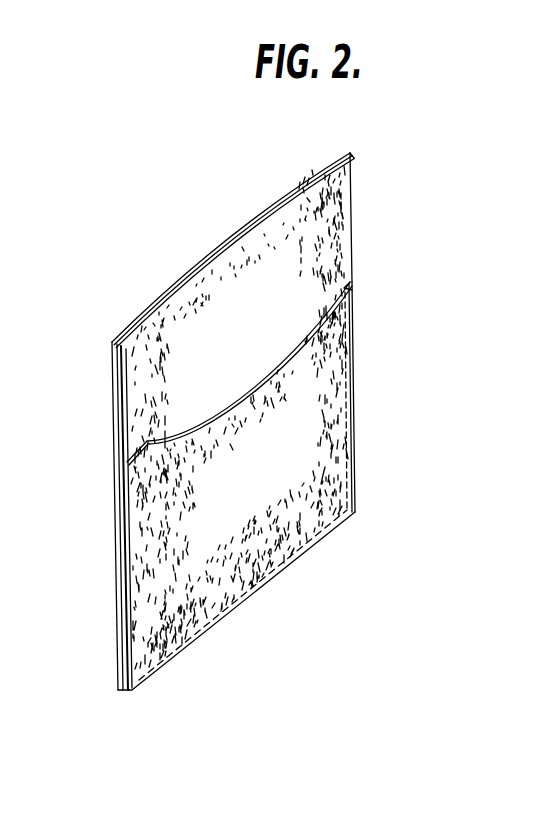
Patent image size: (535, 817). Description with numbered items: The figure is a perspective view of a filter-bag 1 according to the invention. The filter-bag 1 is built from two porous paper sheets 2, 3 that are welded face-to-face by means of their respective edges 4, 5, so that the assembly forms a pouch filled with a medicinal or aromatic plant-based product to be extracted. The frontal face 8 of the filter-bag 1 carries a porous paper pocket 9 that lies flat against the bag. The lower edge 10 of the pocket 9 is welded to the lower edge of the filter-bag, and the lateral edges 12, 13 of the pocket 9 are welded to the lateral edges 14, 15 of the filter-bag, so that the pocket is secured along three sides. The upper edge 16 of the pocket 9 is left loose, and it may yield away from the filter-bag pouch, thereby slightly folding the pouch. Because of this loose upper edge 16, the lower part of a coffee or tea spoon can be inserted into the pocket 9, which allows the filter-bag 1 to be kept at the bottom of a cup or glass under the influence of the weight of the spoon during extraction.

The filter-bag 1 is at (104, 459).
The porous paper sheet 2 is at (318, 190).
The porous paper sheet 3 is at (258, 212).
The edge 4 is at (129, 389).
The edge 5 is at (113, 376).
The frontal face 8 is at (237, 280).
The porous paper pocket 9 is at (283, 413).
The lower edge 10 is at (294, 542).
The lateral edge 12 is at (352, 437).
The lateral edge 13 is at (135, 565).
The lateral edge 14 is at (350, 332).
The lateral edge 15 is at (113, 532).
The upper edge 16 is at (250, 390).